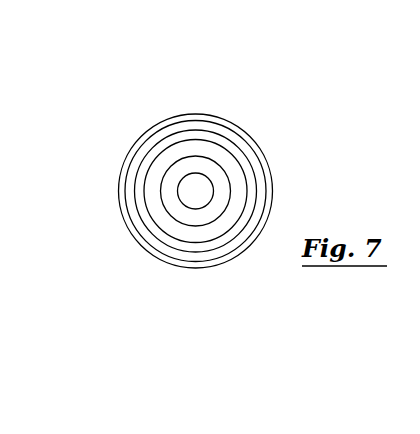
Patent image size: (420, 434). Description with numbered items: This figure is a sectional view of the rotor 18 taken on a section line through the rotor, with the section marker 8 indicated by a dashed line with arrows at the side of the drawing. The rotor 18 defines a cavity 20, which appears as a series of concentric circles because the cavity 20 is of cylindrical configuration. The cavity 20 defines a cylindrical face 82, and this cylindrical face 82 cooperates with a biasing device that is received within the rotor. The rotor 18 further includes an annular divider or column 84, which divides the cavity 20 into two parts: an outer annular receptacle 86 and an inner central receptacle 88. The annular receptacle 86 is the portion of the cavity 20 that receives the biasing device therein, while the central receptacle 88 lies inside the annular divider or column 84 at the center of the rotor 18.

The section line 8- 8 is at (61, 403).
The rotor 18 is at (172, 268).
The cavity 20 is at (153, 212).
The cylindrical face 82 is at (162, 172).
The annular divider or column 84 is at (222, 188).
The annular receptacle 86 is at (203, 233).
The central receptacle 88 is at (195, 178).